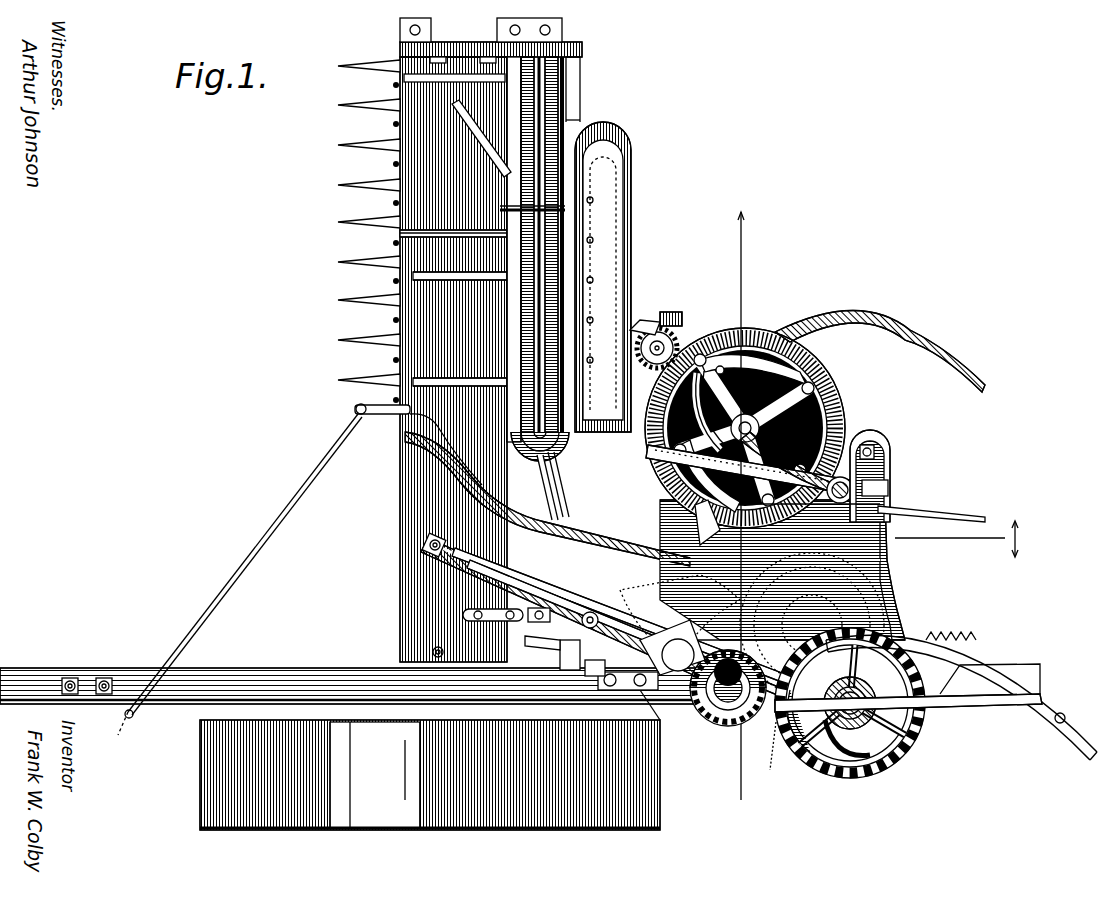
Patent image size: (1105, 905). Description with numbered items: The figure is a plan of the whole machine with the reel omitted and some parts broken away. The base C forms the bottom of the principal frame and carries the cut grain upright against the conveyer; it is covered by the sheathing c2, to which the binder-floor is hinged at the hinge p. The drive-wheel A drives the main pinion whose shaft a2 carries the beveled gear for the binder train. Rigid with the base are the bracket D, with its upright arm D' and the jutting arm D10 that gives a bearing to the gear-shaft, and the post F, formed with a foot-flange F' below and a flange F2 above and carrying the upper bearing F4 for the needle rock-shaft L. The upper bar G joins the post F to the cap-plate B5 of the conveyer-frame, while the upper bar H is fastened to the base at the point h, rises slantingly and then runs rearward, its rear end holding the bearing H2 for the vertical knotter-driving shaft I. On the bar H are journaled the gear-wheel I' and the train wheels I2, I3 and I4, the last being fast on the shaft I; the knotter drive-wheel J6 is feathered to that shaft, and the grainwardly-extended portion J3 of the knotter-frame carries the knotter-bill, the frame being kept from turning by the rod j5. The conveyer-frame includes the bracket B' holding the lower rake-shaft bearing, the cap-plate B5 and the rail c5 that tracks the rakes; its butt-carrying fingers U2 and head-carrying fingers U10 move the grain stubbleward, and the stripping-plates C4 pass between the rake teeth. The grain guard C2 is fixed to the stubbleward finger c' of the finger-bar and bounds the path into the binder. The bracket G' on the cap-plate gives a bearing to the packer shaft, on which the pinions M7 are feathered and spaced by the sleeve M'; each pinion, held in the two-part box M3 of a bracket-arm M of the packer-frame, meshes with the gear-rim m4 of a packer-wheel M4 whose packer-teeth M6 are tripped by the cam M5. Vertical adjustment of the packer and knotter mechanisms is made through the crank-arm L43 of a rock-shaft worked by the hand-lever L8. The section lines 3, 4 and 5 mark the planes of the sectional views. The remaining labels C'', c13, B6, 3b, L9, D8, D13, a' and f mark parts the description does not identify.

The base C is at (466, 340).
The stripping-plates C4 is at (566, 108).
The frame cross piece C'' is at (432, 239).
The grain wall or guard C2 is at (420, 470).
The stubbleward finger of the finger-bar c' is at (382, 426).
The sheathing c2 is at (560, 480).
The rail c5 is at (538, 470).
The pin c13 is at (695, 588).
The butt-carrying fingers U2 is at (400, 300).
The fingers of the head-carrying rakes U10 is at (600, 218).
The bracket B' is at (481, 149).
The cap-plate B5 is at (633, 250).
The panel bracket B6 is at (470, 338).
The drive-wheel A is at (360, 749).
The fastening point of bar H h is at (424, 543).
The section line 3 3 is at (478, 433).
The section line 4 4 is at (470, 516).
The section line 5 5 is at (756, 809).
The section line 3-4 right 3b is at (961, 539).
The horizontal upper bar G is at (636, 410).
The bracket G' is at (657, 325).
The bracket-arms of the packer-frame M is at (745, 410).
The sleeve M' is at (723, 304).
The two-part box M3 is at (680, 314).
The packer-wheel M4 is at (795, 330).
The cam M5 is at (700, 470).
The packer-teeth M6 is at (830, 405).
The pinion M7 is at (678, 340).
The gear-rim m4 is at (820, 365).
The post F is at (777, 555).
The foot or flange F' is at (872, 473).
The flange F2 is at (880, 480).
The upper bearing F4 is at (915, 507).
The needle rock-shaft L is at (885, 496).
The lever L8 is at (672, 748).
The link L9 is at (552, 681).
The crank-arm L43 is at (735, 748).
The knotter-driving shaft I is at (772, 788).
The gear-wheel I' is at (678, 645).
The train wheel I2 is at (812, 625).
The train wheel I3 is at (777, 756).
The train wheel I4 is at (850, 722).
The grainwardly-extended portion of the knotter-frame J3 is at (745, 625).
The knotter drive-wheel J6 is at (850, 730).
The upper bar H is at (718, 615).
The shaft-bearing H2 is at (905, 740).
The bracket D is at (728, 725).
The upright arm D' is at (653, 717).
The link D8 is at (707, 773).
The bracket-like arm D10 is at (672, 647).
The pin D13 is at (594, 675).
The link a' is at (493, 592).
The main driving pinion-shaft a2 is at (563, 618).
The hinge p is at (693, 553).
The pin f is at (633, 575).
The rod j5 is at (639, 558).